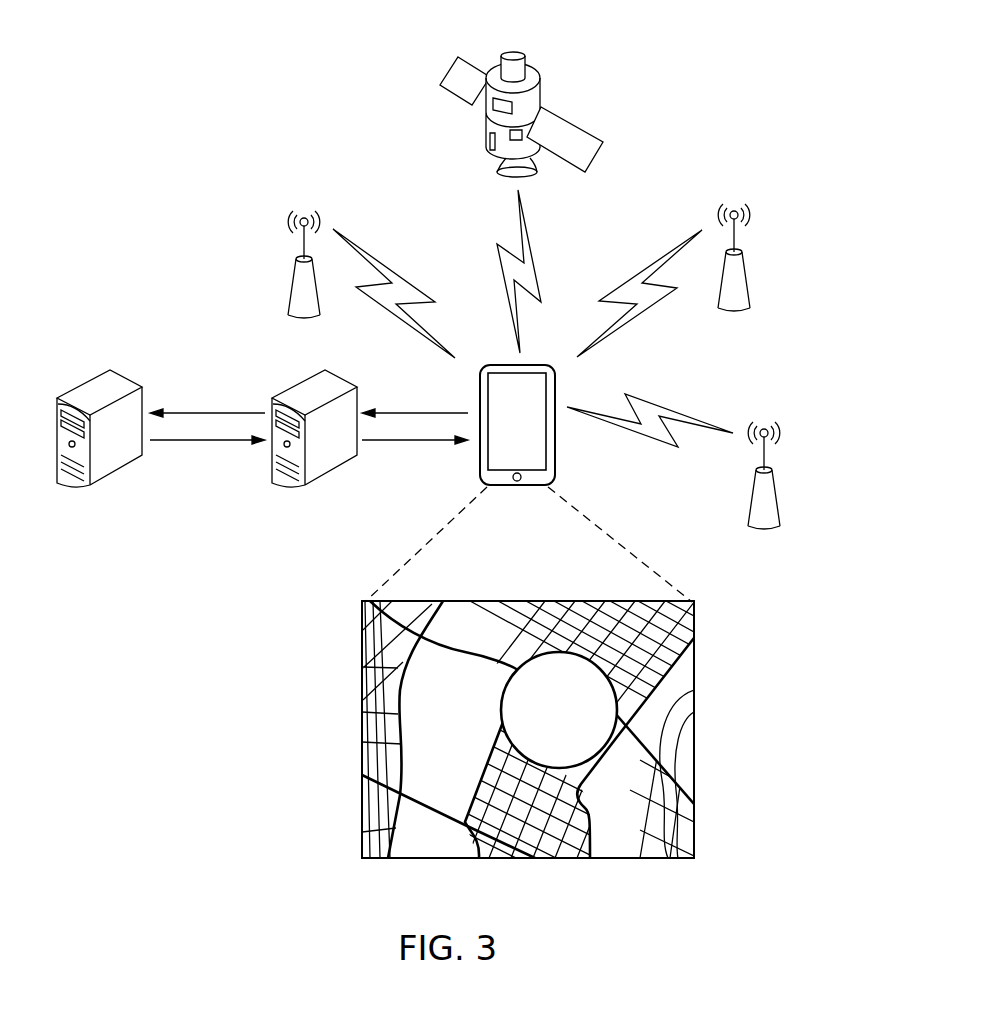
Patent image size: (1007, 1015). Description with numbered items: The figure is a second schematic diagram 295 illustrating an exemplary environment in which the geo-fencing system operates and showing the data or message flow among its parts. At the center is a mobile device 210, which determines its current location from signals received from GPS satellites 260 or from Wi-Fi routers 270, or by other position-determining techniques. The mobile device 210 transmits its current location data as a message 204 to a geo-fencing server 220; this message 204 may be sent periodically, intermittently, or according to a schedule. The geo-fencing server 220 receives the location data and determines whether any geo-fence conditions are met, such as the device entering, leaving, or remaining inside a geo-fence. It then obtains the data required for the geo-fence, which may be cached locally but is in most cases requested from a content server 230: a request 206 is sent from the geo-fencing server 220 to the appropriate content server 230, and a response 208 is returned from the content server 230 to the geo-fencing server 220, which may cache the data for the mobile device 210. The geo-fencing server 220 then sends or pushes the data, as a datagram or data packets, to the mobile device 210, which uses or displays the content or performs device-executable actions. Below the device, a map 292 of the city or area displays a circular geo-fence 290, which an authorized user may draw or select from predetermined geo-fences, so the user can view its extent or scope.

The second schematic diagram 295 is at (165, 81).
The GPS satellites 260 is at (544, 92).
The Wi-Fi routers 270 is at (287, 292).
The content server 230 is at (86, 393).
The geo-fencing server 220 is at (330, 474).
The request 206 is at (198, 411).
The response 208 is at (198, 443).
The message 204 is at (418, 411).
The mobile device 210 is at (420, 443).
The map 292 is at (360, 803).
The geo-fence 290 is at (580, 749).